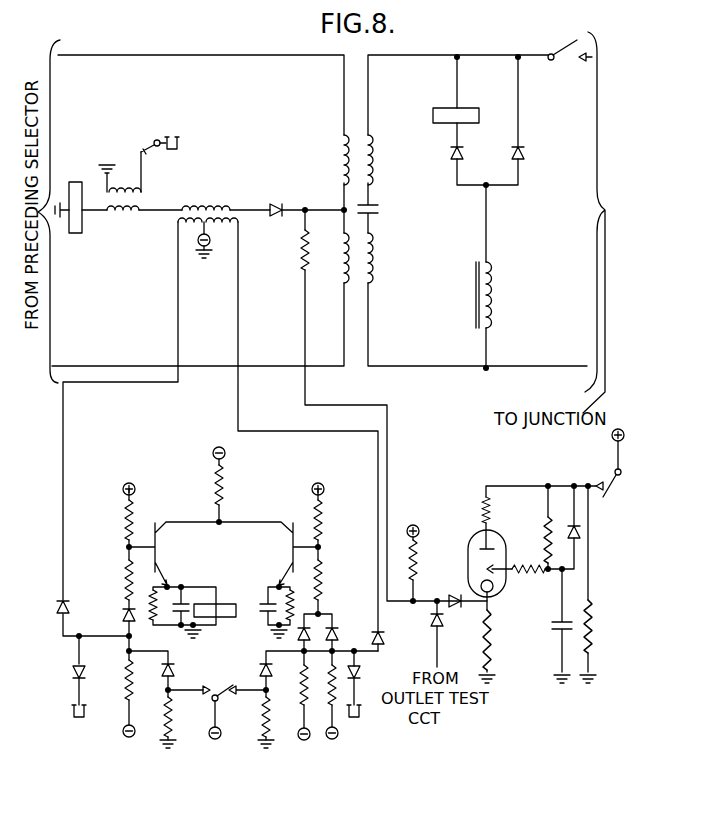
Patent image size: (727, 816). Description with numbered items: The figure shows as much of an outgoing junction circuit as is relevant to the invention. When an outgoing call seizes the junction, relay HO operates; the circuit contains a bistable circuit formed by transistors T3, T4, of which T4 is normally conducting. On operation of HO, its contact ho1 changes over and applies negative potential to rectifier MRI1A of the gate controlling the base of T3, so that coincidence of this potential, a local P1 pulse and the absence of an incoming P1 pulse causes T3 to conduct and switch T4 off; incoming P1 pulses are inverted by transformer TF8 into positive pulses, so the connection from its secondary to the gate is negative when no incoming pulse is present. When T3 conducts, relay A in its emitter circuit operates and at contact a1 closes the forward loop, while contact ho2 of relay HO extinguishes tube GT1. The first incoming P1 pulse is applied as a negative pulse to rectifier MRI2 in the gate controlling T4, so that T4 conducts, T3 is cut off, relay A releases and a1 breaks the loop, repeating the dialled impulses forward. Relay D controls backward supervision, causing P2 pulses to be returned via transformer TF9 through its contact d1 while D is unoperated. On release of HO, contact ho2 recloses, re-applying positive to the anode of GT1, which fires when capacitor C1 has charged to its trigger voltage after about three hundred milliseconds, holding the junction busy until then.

The relay HO is at (70, 218).
The transformer TF9 is at (120, 194).
The transformer TF8 is at (220, 409).
The contact d1 is at (148, 139).
The P2 pulse P2 is at (183, 145).
The relay D is at (446, 116).
The contact a1 is at (570, 46).
The transistor T3 is at (174, 553).
The transistor T4 is at (268, 553).
The relay A is at (215, 601).
The rectifier MR11A MRI1A is at (194, 668).
The contact ho1 is at (237, 712).
The P1 pulse P1 is at (216, 725).
The rectifier MR12 MRI2 is at (399, 641).
The tube GT1 is at (481, 548).
The capacitor C1 is at (550, 626).
The contact ho2 is at (608, 475).